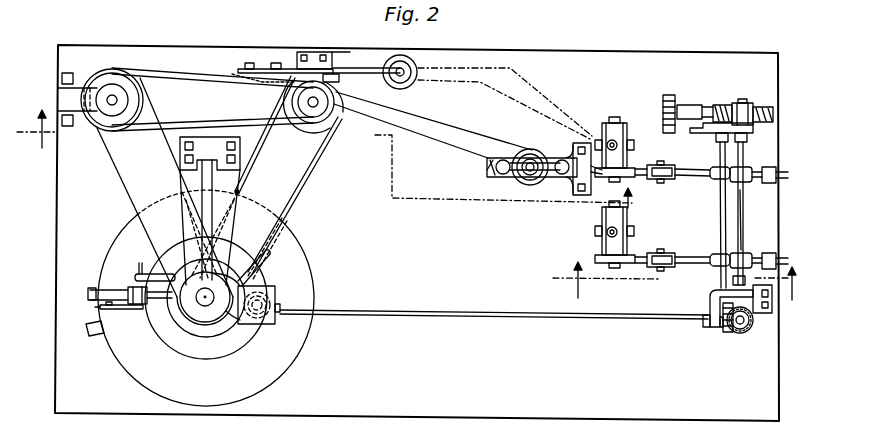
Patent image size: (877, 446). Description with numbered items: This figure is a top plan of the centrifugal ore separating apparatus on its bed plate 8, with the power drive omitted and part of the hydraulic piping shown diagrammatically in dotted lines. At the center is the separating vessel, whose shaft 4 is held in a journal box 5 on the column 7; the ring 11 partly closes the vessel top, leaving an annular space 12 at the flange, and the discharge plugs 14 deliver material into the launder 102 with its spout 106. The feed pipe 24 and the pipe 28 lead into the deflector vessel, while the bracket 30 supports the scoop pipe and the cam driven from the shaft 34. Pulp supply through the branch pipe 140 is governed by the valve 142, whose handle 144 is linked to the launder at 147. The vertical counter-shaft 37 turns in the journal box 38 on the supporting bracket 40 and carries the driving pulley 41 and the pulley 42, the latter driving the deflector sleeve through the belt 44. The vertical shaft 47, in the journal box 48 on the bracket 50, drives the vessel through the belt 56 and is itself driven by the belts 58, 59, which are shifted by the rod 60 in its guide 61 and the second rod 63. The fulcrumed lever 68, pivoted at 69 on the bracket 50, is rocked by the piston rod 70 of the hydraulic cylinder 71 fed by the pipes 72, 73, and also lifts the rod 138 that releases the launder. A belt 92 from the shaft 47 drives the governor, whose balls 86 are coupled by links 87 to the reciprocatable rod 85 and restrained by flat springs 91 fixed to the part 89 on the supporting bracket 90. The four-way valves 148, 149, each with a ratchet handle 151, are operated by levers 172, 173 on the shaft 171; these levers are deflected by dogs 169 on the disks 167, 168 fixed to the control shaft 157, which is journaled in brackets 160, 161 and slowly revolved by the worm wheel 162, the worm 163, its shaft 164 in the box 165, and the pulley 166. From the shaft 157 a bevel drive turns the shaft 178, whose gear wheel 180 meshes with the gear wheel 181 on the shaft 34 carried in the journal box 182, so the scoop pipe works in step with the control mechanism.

The shaft 4 is at (214, 325).
The journal box 5 is at (206, 306).
The column 7 is at (230, 243).
The bed plate 8 is at (57, 222).
The ring 11 is at (238, 342).
The annular space 12 is at (337, 159).
The discharge plugs 14 is at (674, 281).
The feed pipe 24 is at (184, 322).
The pipe 28 is at (138, 273).
The bracket 30 is at (266, 326).
The shaft 34 is at (400, 309).
The counter-shaft 37 is at (96, 126).
The journal box 38 is at (112, 82).
The supporting bracket 40 is at (63, 90).
The pulley 41 is at (130, 70).
The pulley 42 is at (104, 133).
The belt 44 is at (120, 172).
The vertical shaft 47 is at (303, 130).
The journal box 48 is at (322, 122).
The bracket 50 is at (309, 81).
The belt 56 is at (300, 181).
The belt 58 is at (199, 122).
The belt 59 is at (200, 82).
The rod 60 is at (250, 62).
The guide 61 is at (278, 89).
The second rod 63 is at (319, 53).
The fulcrumed lever 68 is at (276, 62).
The fulcrum 69 is at (334, 74).
The piston rod 70 is at (405, 70).
The hydraulic cylinder 71 is at (412, 84).
The hydraulic pipe 72 is at (534, 89).
The hydraulic pipe 73 is at (498, 92).
The reciprocatable rod 85 is at (531, 186).
The governor balls 86 is at (490, 178).
The links 87 is at (503, 176).
The part 89 is at (535, 149).
The supporting bracket 90 is at (560, 155).
The flat springs 91 is at (497, 159).
The belt 92 is at (446, 141).
The launder 102 is at (130, 228).
The spout 106 is at (92, 336).
The rod 138 is at (362, 68).
The branch pipe 140 is at (88, 288).
The valve 142 is at (113, 286).
The handle 144 is at (128, 311).
The hinge connection 147 is at (98, 308).
The four-way valve 148 is at (611, 130).
The four-way valve 149 is at (625, 233).
The handle 151 is at (598, 180).
The shaft 157 is at (745, 222).
The supporting bracket 160 is at (754, 295).
The supporting bracket 161 is at (755, 132).
The worm wheel 162 is at (777, 112).
The worm 163 is at (746, 99).
The shaft 164 is at (715, 104).
The box 165 is at (680, 104).
The pulley 166 is at (664, 104).
The disk 167 is at (753, 252).
The disk 168 is at (750, 183).
The dogs 169 is at (777, 171).
The shaft 171 is at (719, 205).
The lever 172 is at (690, 268).
The lever 173 is at (690, 167).
The shaft 178 is at (745, 334).
The gear wheel 180 is at (752, 326).
The gear wheel 181 is at (724, 334).
The journal box 182 is at (707, 328).